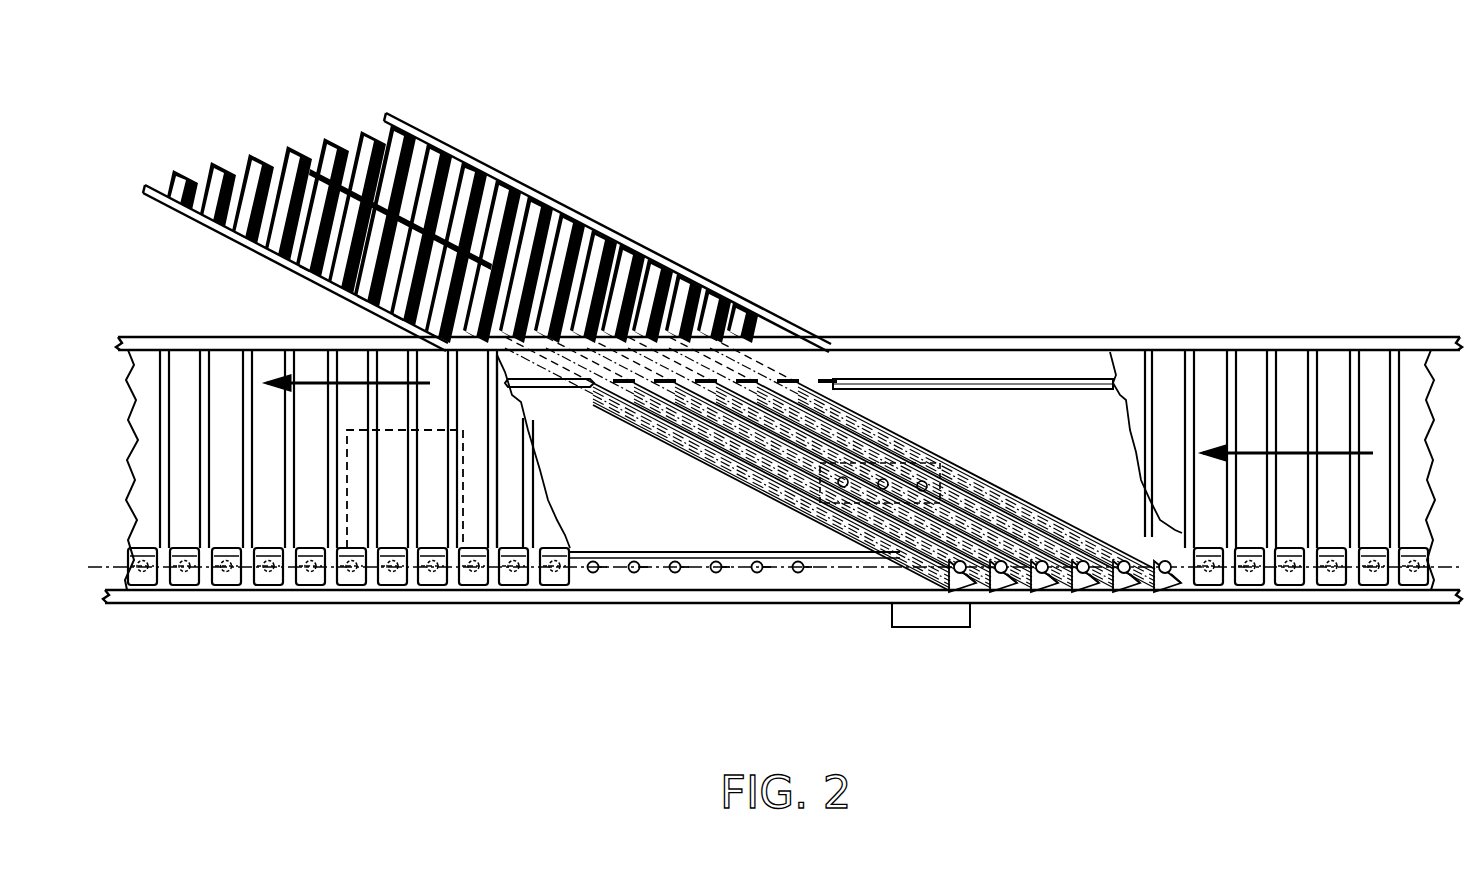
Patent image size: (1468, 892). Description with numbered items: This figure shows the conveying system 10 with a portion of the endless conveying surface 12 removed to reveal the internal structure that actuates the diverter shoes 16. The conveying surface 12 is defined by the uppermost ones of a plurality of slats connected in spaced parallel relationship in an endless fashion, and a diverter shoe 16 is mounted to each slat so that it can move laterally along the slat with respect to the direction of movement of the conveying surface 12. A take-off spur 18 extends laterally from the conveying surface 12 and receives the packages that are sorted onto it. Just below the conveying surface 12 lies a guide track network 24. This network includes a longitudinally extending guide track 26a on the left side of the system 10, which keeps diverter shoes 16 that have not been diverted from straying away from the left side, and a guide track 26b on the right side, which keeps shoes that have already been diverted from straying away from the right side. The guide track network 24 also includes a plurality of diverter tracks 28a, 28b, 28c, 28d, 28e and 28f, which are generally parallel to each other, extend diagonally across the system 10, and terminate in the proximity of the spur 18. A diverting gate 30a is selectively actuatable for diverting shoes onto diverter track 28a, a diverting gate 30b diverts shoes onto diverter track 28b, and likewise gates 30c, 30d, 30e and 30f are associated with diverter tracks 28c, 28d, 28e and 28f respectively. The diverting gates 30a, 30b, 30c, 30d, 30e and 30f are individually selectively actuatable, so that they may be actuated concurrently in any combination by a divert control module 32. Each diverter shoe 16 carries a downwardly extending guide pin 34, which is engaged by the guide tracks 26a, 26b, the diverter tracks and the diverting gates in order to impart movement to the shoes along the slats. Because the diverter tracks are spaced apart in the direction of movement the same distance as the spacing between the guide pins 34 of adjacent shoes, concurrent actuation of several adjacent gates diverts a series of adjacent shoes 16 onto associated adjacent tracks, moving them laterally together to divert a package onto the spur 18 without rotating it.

The conveying system 10 is at (378, 615).
The endless conveying surface 12 is at (225, 405).
The diverter shoe 16 is at (215, 588).
The take-off spur 18 is at (626, 237).
The guide track network 24 is at (722, 481).
The guide track 26a is at (845, 562).
The guide track 26b is at (972, 385).
The diverter track 28a is at (645, 413).
The diverter track 28b is at (712, 436).
The diverter track 28c is at (800, 463).
The diverter track 28d is at (827, 440).
The diverter track 28e is at (948, 484).
The diverter track 28f is at (1027, 504).
The diverting gate 30a is at (967, 590).
The diverting gate 30b is at (1008, 592).
The diverting gate 30c is at (1050, 592).
The diverting gate 30d is at (1093, 592).
The diverting gate 30e is at (1132, 592).
The diverting gate 30f is at (1170, 592).
The divert control module 32 is at (935, 628).
The guide pin 34 is at (226, 570).